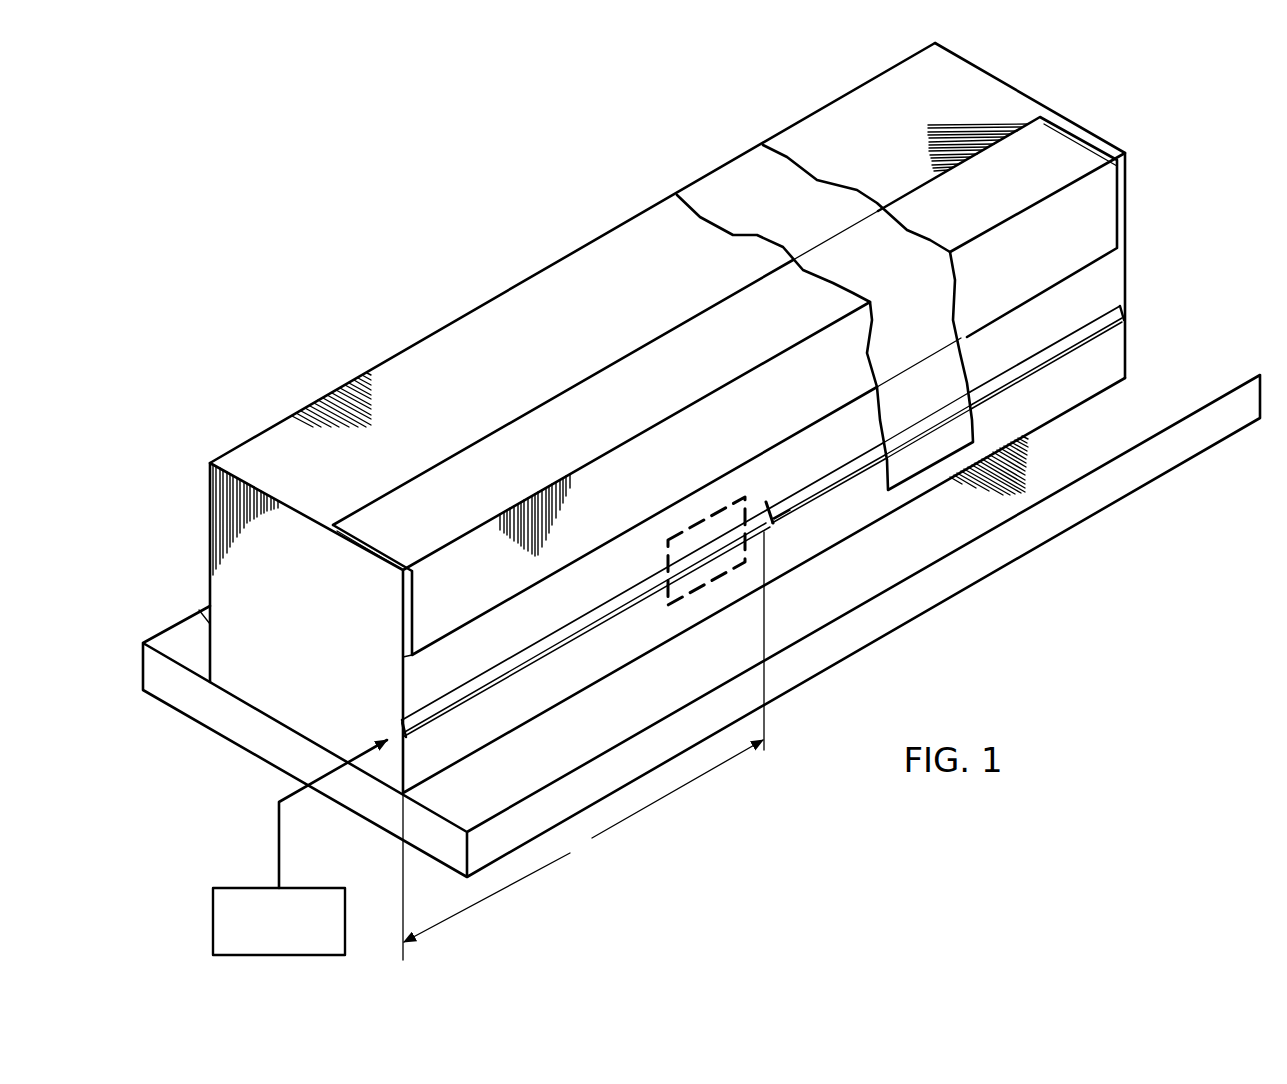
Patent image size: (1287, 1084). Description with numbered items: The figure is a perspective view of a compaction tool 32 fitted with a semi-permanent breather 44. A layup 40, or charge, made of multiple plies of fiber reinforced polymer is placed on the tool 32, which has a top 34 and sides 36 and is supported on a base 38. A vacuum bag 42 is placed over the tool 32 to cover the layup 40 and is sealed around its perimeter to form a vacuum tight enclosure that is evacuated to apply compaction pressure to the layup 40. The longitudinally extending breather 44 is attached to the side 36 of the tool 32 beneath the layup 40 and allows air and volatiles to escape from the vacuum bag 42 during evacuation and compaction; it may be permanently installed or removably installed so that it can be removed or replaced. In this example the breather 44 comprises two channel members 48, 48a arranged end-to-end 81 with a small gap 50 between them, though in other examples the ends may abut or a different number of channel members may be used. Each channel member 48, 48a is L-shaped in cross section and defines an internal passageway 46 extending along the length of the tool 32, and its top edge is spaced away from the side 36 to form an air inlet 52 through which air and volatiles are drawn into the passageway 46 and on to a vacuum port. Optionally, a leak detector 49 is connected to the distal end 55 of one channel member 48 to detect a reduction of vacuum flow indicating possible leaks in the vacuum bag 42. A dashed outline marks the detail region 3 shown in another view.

The detail region 3 is at (693, 520).
The tool 32 is at (272, 643).
The top 34 is at (395, 372).
The side 36 is at (1120, 270).
The base 38 is at (258, 742).
The layup 40 is at (680, 413).
The vacuum bag 42 is at (725, 185).
The semi-permanent breather 44 is at (641, 608).
The internal passageway 46 is at (396, 727).
The channel member 48 is at (478, 680).
The channel member 48a is at (1072, 340).
The leak detector 49 is at (213, 922).
The gap 50 is at (780, 525).
The air inlet 52 is at (420, 702).
The distal end 55 is at (397, 744).
The end-to-end arrangement 81 is at (767, 498).